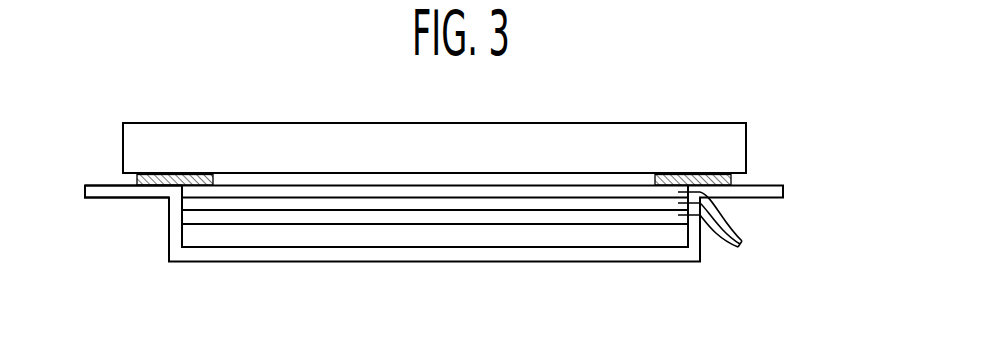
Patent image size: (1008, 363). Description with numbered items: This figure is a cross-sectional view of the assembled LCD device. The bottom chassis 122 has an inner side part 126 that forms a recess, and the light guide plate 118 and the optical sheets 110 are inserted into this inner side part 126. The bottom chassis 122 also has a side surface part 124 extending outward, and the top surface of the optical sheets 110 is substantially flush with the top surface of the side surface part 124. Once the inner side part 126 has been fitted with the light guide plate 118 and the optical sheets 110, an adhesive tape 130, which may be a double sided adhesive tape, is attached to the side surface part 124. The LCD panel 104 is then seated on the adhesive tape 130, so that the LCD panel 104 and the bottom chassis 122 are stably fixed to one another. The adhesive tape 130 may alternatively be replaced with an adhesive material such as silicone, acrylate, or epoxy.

The LCD panel 104 is at (738, 139).
The adhesive tape 130 is at (733, 180).
The bottom chassis 122 is at (788, 192).
The side surface part 124 is at (108, 185).
The inner side part 126 is at (578, 247).
The light guide plate 118 is at (449, 237).
The optical sheets 110 is at (730, 226).